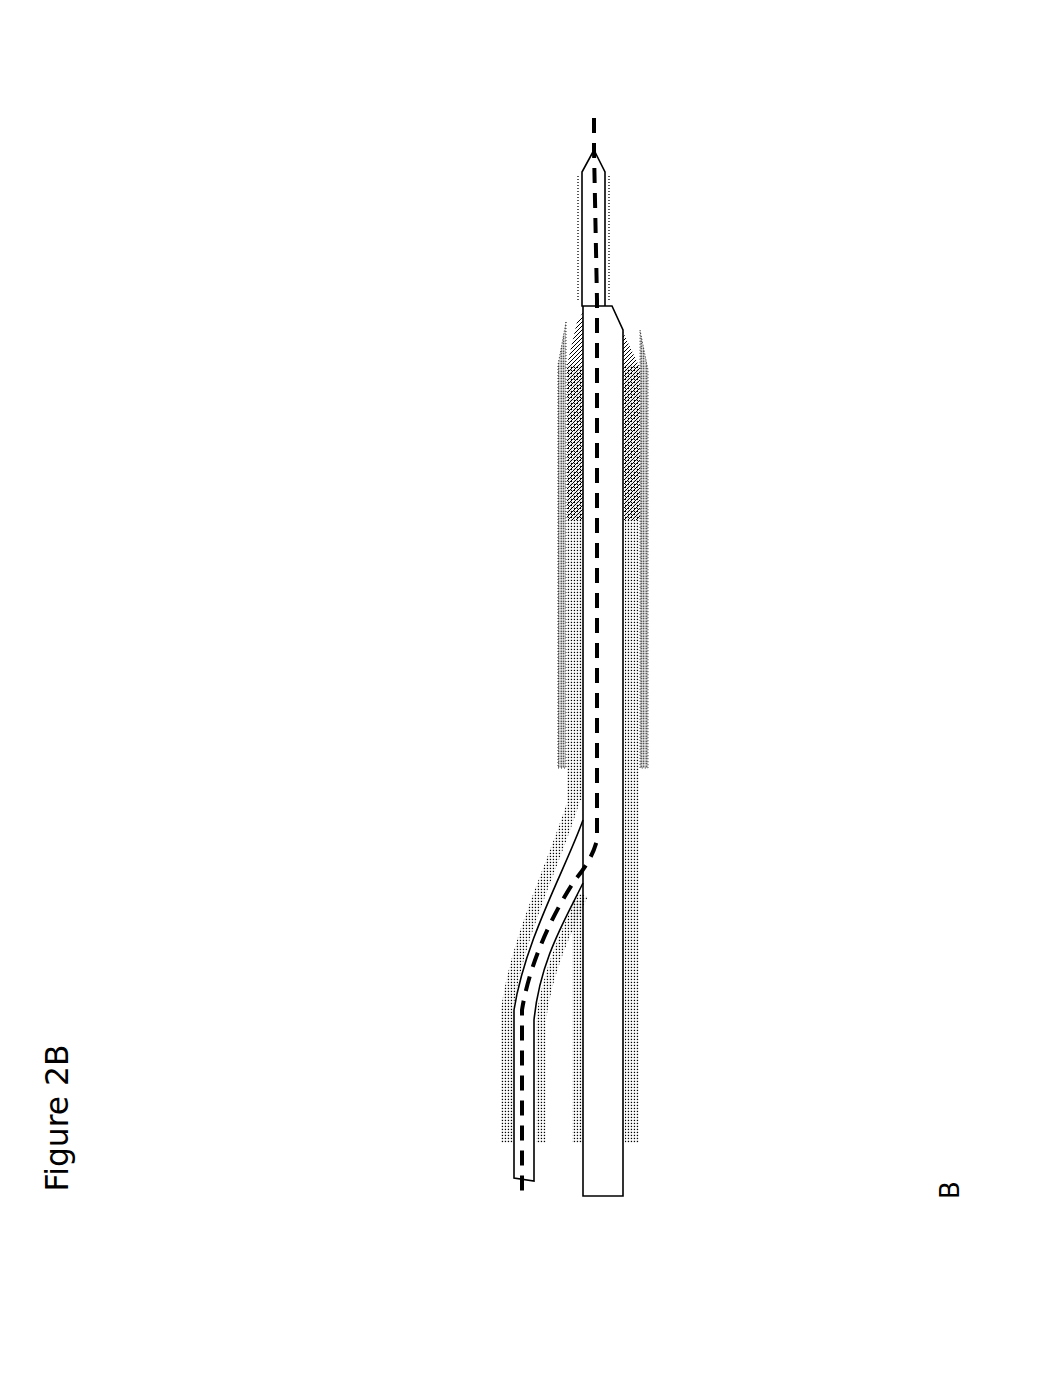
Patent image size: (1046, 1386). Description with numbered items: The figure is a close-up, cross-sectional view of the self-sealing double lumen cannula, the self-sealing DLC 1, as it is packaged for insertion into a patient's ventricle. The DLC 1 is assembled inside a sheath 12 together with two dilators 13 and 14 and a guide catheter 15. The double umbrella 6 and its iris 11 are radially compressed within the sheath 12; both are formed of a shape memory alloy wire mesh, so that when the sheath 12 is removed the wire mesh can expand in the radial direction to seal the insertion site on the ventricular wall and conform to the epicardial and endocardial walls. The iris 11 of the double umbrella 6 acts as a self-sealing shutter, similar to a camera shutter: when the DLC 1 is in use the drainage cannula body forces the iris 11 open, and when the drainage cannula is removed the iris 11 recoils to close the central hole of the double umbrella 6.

The self-sealing DLC 1 is at (645, 815).
The double umbrella 6 is at (553, 379).
The iris 11 is at (653, 438).
The sheath 12 is at (551, 623).
The dilator 13 is at (500, 1165).
The dilator 14 is at (624, 1057).
The guide catheter 15 is at (577, 131).